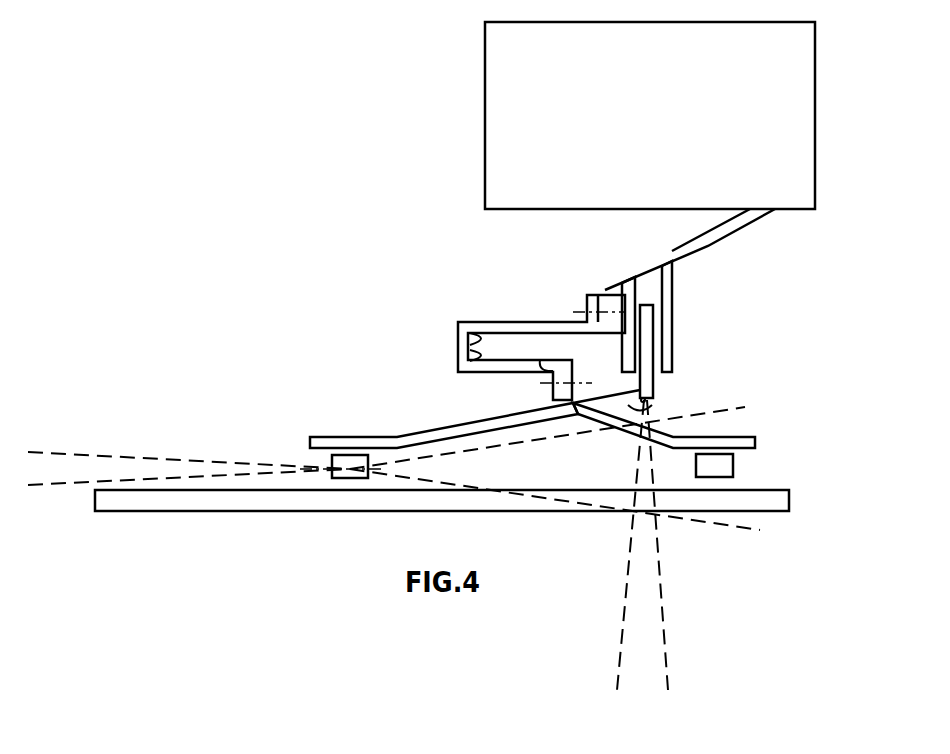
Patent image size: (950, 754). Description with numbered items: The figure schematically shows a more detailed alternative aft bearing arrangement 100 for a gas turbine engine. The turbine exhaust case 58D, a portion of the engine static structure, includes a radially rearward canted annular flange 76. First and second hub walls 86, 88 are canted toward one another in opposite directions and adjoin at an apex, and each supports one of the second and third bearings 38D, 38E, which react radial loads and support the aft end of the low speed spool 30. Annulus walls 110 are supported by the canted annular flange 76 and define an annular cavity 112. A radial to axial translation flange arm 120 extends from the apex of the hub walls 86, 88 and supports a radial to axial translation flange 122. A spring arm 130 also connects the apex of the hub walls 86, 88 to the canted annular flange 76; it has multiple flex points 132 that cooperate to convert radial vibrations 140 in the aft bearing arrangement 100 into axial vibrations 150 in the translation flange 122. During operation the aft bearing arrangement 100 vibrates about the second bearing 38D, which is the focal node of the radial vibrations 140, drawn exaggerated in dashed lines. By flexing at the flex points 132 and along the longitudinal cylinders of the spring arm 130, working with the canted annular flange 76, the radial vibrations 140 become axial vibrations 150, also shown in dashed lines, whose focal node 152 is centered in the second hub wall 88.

The low speed spool 30 is at (226, 512).
The second bearing 38D is at (350, 456).
The third bearing 38E is at (735, 469).
The turbine exhaust case 58D is at (650, 115).
The radially rearward canted annular flange 76 is at (744, 227).
The first hub wall 86 is at (466, 422).
The second hub wall 88 is at (692, 430).
The aft bearing arrangement 100 is at (785, 345).
The annulus walls 110 is at (675, 280).
The annular cavity 112 is at (638, 295).
The radial to axial translation flange arm 120 is at (650, 399).
The radial to axial translation flange 122 is at (655, 348).
The spring arm 130 is at (472, 320).
The flex points 132 is at (487, 337).
The radial vibrations 140 is at (748, 405).
The axial vibrations 150 is at (617, 643).
The focal node 152 is at (638, 437).